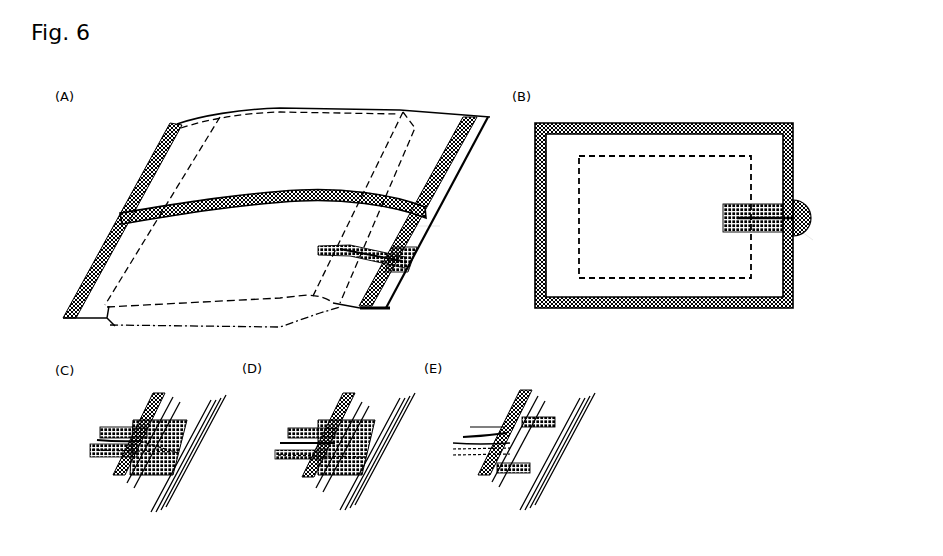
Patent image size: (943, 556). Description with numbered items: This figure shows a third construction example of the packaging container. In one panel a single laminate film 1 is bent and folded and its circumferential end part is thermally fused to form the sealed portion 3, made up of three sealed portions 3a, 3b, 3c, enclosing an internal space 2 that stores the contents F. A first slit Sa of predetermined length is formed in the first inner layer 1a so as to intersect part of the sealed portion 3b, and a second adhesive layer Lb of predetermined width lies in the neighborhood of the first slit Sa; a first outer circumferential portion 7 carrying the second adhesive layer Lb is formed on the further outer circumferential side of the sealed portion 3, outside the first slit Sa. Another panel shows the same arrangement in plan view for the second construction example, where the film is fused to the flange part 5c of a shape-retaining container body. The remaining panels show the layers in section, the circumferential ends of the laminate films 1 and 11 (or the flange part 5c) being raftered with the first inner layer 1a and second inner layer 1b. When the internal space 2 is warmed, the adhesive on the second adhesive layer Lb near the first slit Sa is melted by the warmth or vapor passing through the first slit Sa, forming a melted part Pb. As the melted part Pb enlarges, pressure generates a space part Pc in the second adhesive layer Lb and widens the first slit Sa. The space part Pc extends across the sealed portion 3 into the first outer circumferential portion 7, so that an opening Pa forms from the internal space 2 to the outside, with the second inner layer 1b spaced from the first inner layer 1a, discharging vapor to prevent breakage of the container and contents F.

The laminate film 1 is at (427, 109).
The internal space 2 is at (433, 131).
The sealed portion 3 is at (615, 308).
The sealed portion 3a is at (153, 163).
The sealed portion 3b is at (453, 167).
The sealed portion 3c is at (263, 203).
The first outer circumferential portion 7 is at (427, 227).
The laminate film 11 is at (331, 310).
The flange part 5c is at (140, 499).
The first inner layer 1a is at (125, 482).
The second inner layer 1b is at (131, 489).
The contents F is at (213, 318).
The second adhesive layer Lb is at (327, 244).
The first slit Sa is at (370, 257).
The opening Pa is at (536, 430).
The melted part Pb is at (117, 428).
The space part Pc is at (300, 431).